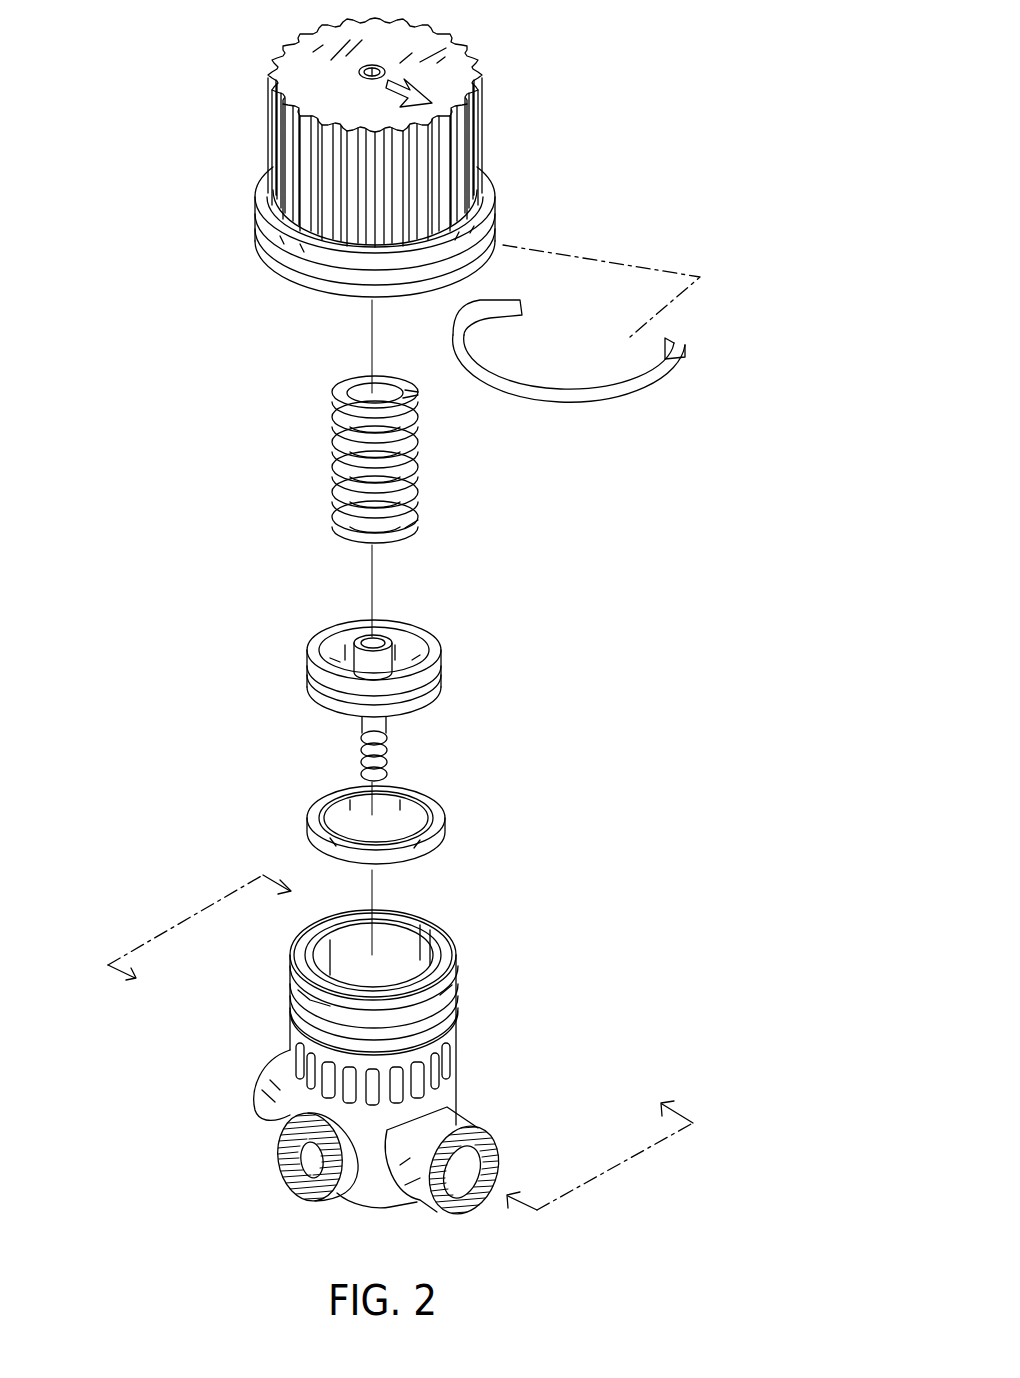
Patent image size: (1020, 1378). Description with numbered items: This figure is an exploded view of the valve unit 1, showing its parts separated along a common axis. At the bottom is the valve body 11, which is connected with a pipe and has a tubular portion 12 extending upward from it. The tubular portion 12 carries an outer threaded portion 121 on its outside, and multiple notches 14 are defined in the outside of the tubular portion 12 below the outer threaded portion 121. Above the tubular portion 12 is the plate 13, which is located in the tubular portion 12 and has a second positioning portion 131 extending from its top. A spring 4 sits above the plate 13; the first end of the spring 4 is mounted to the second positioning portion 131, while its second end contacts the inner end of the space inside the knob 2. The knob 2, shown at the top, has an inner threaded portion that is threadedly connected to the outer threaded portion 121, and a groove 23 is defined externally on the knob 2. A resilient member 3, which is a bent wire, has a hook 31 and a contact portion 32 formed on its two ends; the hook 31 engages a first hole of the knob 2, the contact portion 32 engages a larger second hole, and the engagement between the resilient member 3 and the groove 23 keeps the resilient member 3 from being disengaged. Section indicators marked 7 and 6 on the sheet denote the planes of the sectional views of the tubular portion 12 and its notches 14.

The valve unit 1 is at (445, 626).
The knob 2 is at (403, 182).
The groove 23 is at (308, 272).
The resilient member 3 is at (618, 392).
The hook 31 is at (686, 340).
The contact portion 32 is at (520, 335).
The spring 4 is at (328, 455).
The plate 13 is at (372, 687).
The second positioning portion 131 is at (343, 640).
The tubular portion 12 is at (457, 985).
The outer threaded portion 121 is at (458, 968).
The notches 14 is at (300, 1062).
The valve body 11 is at (370, 1049).
The section line 7- 7 is at (208, 957).
The section line 6- 6 is at (600, 1135).